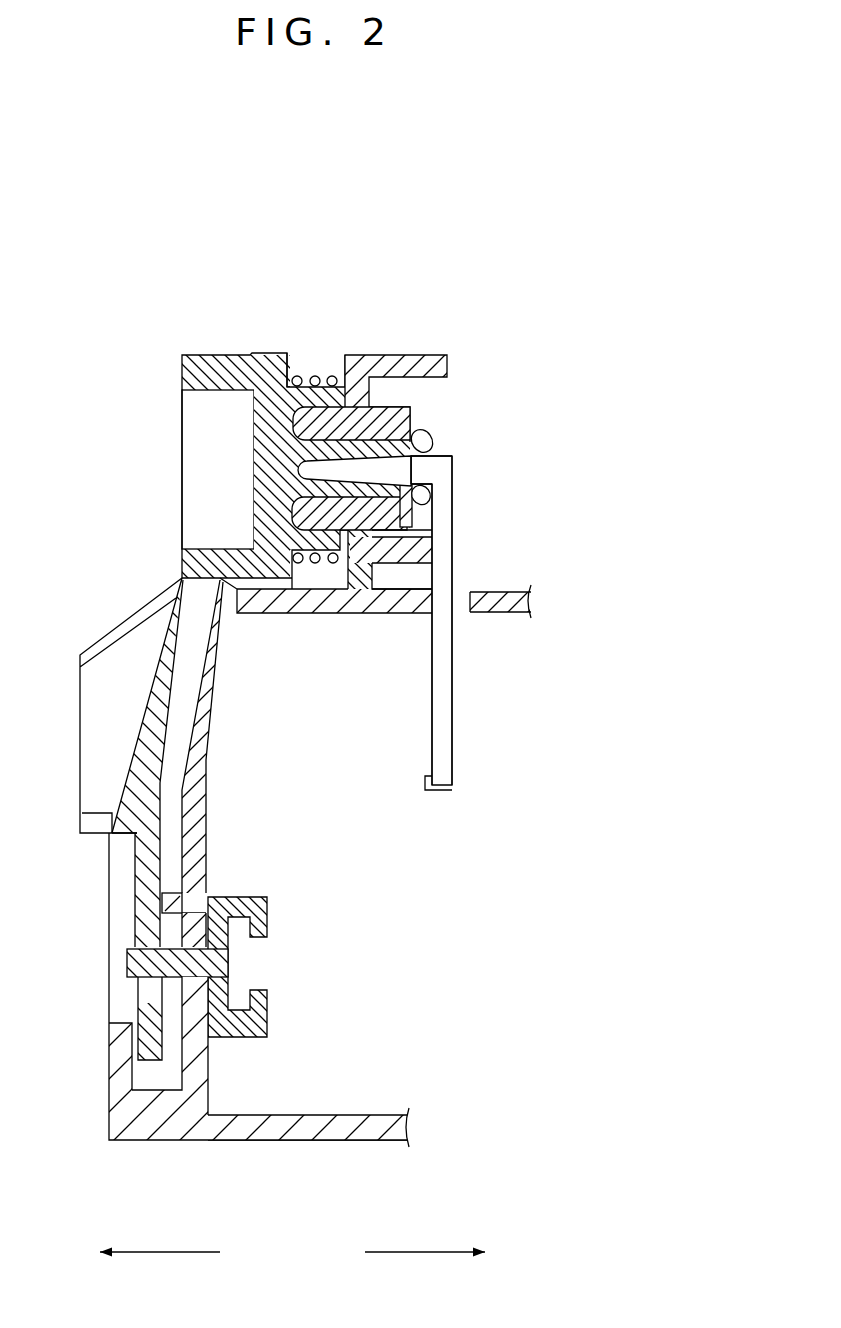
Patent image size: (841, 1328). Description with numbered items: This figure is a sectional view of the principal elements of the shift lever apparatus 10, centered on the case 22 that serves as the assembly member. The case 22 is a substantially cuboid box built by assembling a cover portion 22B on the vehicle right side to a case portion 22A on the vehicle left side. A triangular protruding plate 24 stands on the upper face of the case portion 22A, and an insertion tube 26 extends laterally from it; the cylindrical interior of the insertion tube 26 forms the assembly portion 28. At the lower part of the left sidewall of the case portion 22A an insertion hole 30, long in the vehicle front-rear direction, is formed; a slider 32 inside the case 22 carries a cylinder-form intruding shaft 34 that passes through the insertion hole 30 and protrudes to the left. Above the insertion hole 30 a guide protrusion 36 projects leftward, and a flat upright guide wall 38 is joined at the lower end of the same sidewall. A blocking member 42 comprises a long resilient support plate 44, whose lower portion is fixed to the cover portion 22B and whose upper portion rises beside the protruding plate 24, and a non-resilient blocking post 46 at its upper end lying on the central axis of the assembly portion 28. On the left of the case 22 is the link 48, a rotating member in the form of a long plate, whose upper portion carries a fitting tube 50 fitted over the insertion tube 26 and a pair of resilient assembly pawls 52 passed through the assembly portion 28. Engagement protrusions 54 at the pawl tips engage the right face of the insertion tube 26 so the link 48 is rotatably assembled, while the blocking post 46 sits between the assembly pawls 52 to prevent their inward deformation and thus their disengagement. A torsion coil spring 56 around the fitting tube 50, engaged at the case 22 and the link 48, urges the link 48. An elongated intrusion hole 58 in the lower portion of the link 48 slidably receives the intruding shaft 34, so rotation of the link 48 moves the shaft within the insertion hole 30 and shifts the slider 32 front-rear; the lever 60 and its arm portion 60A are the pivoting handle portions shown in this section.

The lever device 10 is at (350, 237).
The case 22 is at (304, 1146).
The case portion 22A is at (205, 1141).
The cover portion 22B is at (522, 592).
The protruding plate 24 is at (348, 356).
The insertion tube 26 is at (400, 376).
The assembly portion 28 is at (416, 409).
The insertion hole 30 is at (215, 893).
The slider 32 is at (268, 905).
The intruding shaft 34 is at (128, 965).
The guide protrusion 36 is at (168, 890).
The guide wall 38 is at (118, 1045).
The blocking member 42 is at (460, 500).
The support plate 44 is at (453, 700).
The blocking post 46 is at (425, 468).
The link 48 is at (180, 350).
The fitting tube 50 is at (338, 372).
The assembly pawls 52 is at (298, 518).
The engagement protrusions 54 is at (432, 437).
The torsion coil spring 56 is at (313, 372).
The intrusion hole 58 is at (162, 907).
The operating lever 60 is at (178, 592).
The arm portion 60A is at (108, 640).